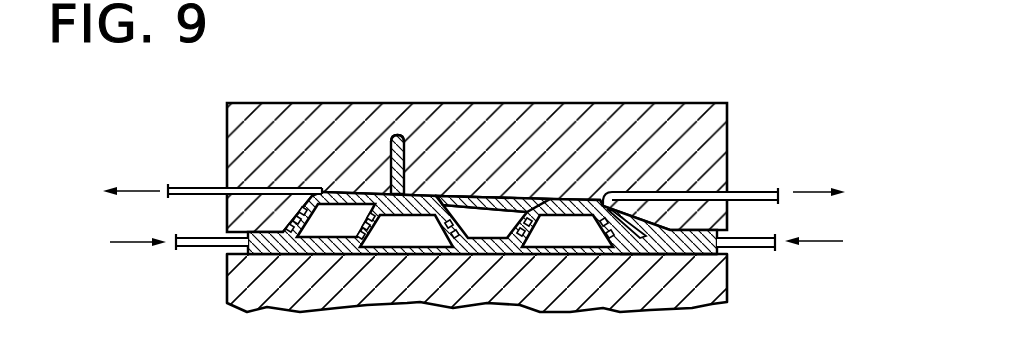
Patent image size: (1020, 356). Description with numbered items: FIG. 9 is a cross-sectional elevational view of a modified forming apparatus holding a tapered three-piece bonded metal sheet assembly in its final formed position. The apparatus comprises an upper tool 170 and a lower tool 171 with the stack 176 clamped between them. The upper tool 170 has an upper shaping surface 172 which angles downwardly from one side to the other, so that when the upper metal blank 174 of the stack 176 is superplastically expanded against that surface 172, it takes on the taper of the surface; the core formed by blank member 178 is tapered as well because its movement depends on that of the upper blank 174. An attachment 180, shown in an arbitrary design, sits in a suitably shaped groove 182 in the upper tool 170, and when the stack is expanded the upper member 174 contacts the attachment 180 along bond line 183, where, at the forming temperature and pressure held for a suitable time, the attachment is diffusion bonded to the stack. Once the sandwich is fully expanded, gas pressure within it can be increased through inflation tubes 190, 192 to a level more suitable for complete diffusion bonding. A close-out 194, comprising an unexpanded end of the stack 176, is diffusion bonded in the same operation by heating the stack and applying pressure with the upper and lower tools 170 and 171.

The upper tool 170 is at (648, 118).
The lower tool 171 is at (692, 296).
The upper shaping surface 172 is at (503, 197).
The upper metal blank 174 is at (331, 188).
The stack 176 is at (273, 255).
The blank member 178 is at (525, 226).
The attachment 180 is at (392, 140).
The groove 182 is at (403, 140).
The bond line 183 is at (428, 189).
The inflation tube 190 is at (742, 237).
The inflation tube 192 is at (200, 248).
The close-out 194 is at (668, 256).